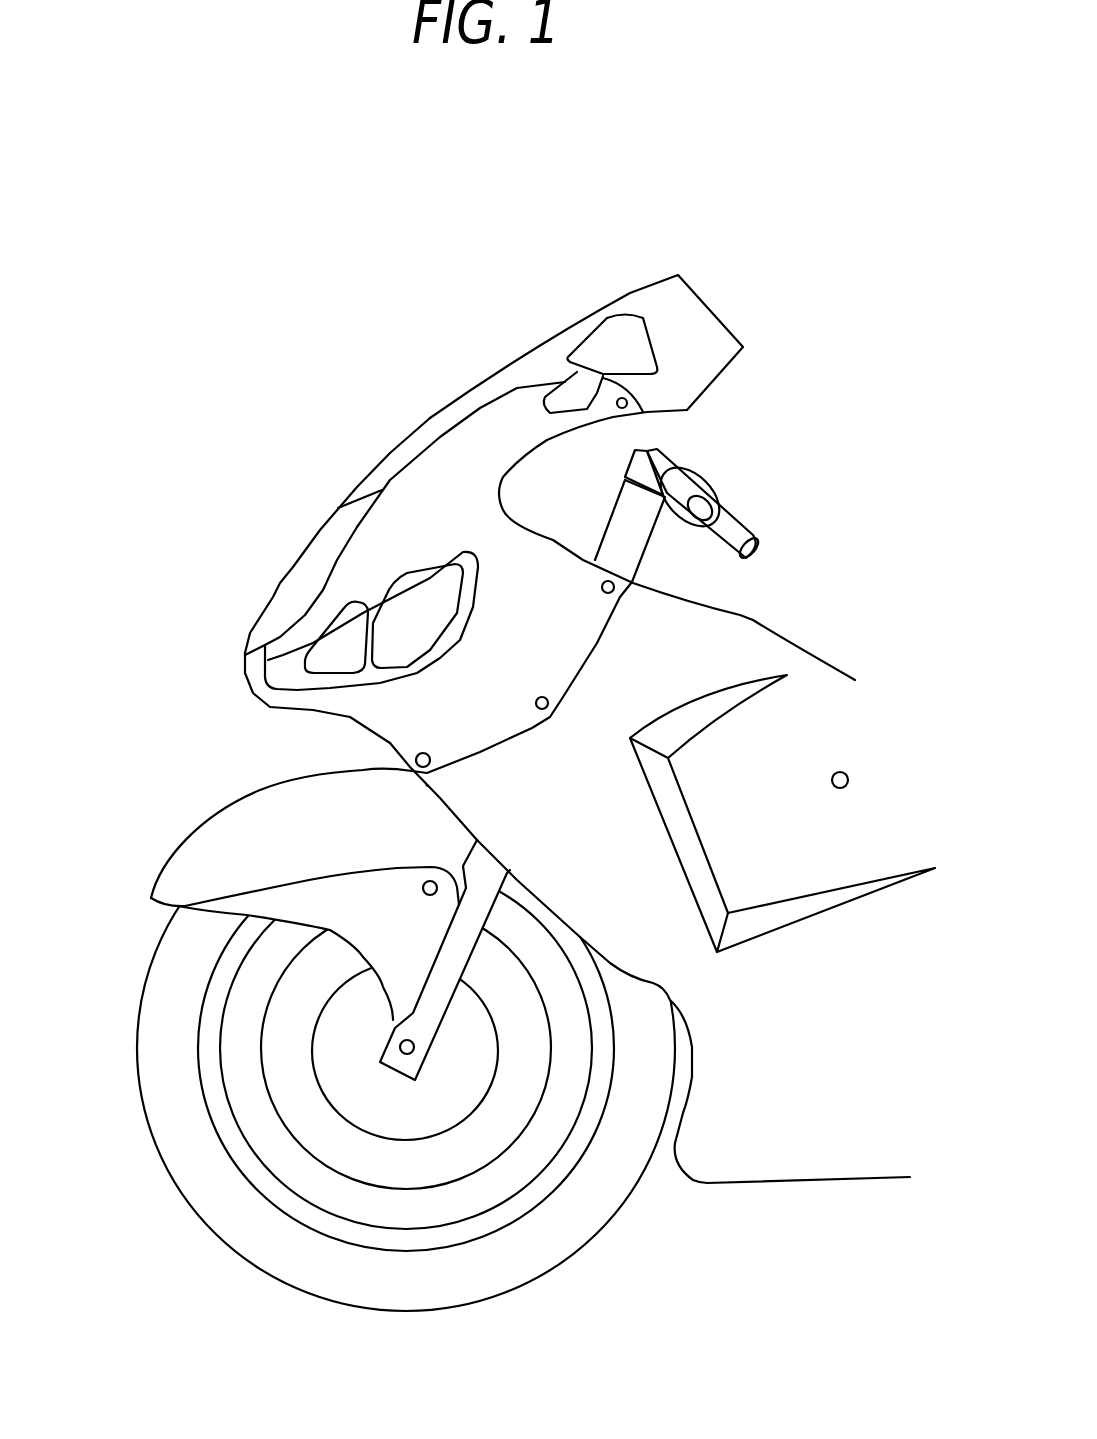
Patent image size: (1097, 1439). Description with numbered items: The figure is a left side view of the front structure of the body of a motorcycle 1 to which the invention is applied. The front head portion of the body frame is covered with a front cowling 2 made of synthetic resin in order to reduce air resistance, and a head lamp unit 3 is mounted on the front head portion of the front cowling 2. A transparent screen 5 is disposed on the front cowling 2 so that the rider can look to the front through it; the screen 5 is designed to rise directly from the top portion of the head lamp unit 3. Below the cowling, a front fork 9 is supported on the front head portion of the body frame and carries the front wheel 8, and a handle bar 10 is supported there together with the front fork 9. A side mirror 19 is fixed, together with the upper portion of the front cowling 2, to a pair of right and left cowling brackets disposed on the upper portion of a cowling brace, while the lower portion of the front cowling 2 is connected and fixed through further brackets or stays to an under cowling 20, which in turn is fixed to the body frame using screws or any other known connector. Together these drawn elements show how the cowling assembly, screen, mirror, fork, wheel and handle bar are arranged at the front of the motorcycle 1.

The motorcycle 1 is at (508, 298).
The front cowling 2 is at (390, 535).
The head lamp unit 3 is at (277, 583).
The screen 5 is at (427, 420).
The front wheel 8 is at (137, 1063).
The front fork 9 is at (428, 1030).
The handle bar 10 is at (733, 527).
The side mirror 19 is at (626, 322).
The under cowling 20 is at (797, 1173).